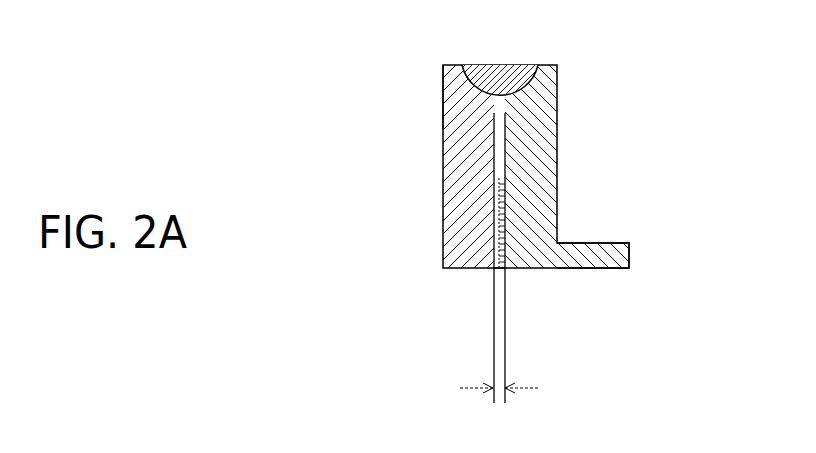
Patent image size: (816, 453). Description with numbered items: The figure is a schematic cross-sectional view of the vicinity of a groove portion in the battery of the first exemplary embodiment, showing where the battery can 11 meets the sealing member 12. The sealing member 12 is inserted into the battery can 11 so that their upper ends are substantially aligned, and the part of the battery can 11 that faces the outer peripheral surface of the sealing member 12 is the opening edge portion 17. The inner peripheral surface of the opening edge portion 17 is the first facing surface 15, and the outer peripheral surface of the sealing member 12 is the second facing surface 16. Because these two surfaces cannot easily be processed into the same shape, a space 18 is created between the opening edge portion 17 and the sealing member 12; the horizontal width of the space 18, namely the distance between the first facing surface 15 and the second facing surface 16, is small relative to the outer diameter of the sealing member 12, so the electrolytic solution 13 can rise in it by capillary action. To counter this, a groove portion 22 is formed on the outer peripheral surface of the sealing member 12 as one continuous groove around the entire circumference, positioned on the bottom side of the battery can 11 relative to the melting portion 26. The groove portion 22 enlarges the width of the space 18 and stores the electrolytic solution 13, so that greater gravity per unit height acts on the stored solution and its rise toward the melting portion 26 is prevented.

The battery can 11 is at (443, 182).
The sealing member 12 is at (629, 253).
The electrolytic solution 13 is at (496, 266).
The first facing surface 15 is at (469, 374).
The second facing surface 16 is at (528, 374).
The opening edge portion 17 is at (443, 98).
The space 18 is at (500, 135).
The groove portion 22 is at (503, 178).
The melting portion 26 is at (485, 73).